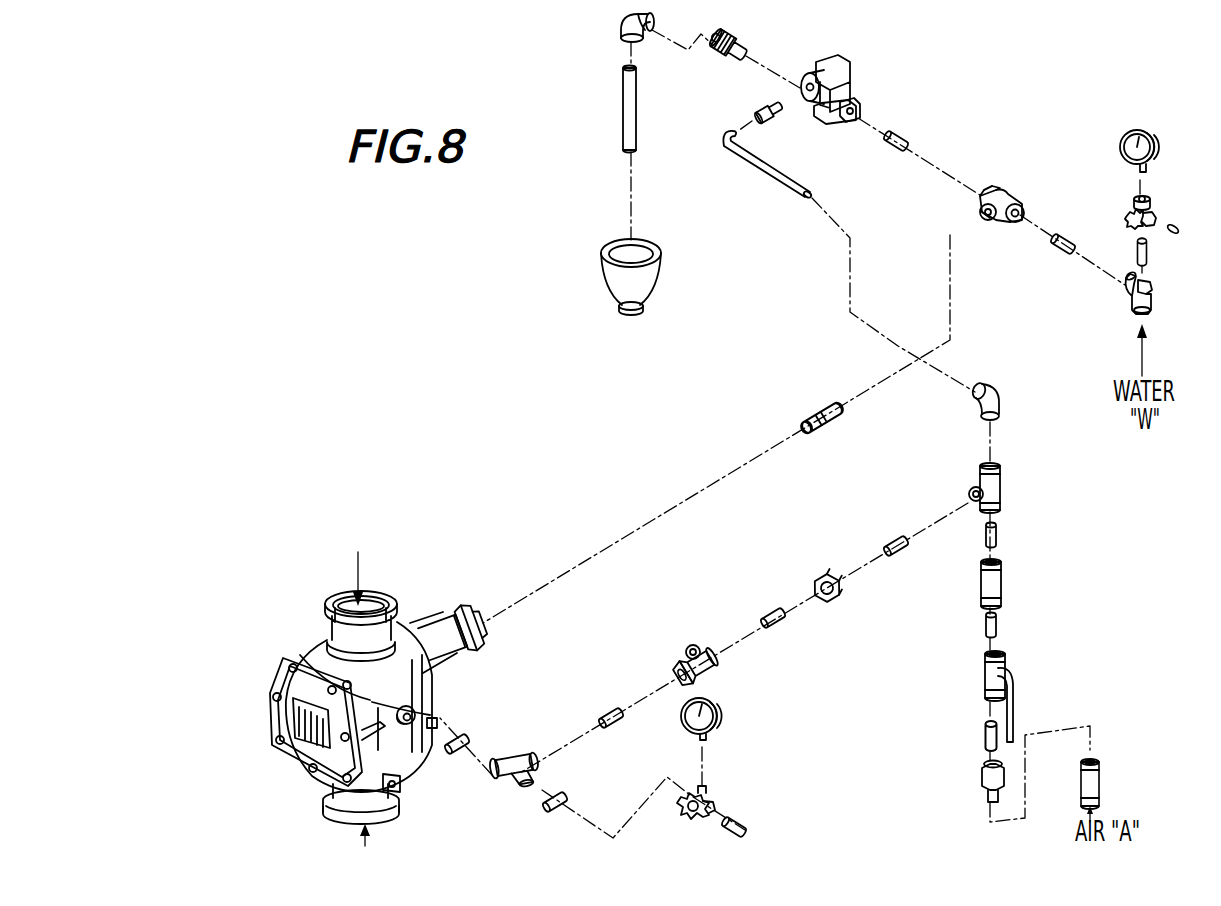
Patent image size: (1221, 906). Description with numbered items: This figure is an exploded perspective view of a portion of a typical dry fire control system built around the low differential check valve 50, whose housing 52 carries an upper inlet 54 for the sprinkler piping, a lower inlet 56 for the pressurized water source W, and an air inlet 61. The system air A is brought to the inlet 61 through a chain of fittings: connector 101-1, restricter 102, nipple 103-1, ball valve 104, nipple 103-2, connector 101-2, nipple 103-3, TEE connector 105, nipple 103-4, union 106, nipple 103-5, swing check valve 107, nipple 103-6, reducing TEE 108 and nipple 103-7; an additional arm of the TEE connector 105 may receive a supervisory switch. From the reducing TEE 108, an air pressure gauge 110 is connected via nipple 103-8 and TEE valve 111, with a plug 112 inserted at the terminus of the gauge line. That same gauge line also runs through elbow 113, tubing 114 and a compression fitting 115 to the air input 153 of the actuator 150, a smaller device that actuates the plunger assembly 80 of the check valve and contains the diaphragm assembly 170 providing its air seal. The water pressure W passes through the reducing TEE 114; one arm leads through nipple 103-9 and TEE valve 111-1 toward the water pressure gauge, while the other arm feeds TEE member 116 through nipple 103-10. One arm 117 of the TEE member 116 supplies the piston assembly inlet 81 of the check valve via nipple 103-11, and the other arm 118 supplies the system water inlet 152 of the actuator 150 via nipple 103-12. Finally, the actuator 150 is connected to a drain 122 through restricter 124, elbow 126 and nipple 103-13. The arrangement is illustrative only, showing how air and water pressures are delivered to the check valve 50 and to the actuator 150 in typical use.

The check valve 50 is at (410, 615).
The housing 52 is at (316, 640).
The upper inlet 54 is at (382, 603).
The inlet 56 is at (398, 814).
The inlet 61 is at (414, 713).
The plunger assembly 80 is at (458, 668).
The piston assembly inlet 81 is at (468, 616).
The connector 101-1 is at (1100, 778).
The connector 101-2 is at (1003, 583).
The restricter 102 is at (980, 778).
The nipple 103-1 is at (988, 733).
The nipple 103-2 is at (1002, 623).
The nipple 103-3 is at (1000, 532).
The nipple 103-4 is at (893, 540).
The nipple 103-5 is at (778, 623).
The nipple 103-6 is at (607, 711).
The nipple 103-7 is at (460, 741).
The nipple 103-8 is at (566, 790).
The nipple 103-9 is at (1148, 256).
The nipple 103-10 is at (1058, 240).
The nipple 103-11 is at (834, 412).
The nipple 103-12 is at (900, 137).
The nipple 103-13 is at (624, 108).
The ball valve 104 is at (1010, 680).
The TEE connector 105 is at (1000, 489).
The union 106 is at (823, 580).
The swing check valve 107 is at (690, 660).
The reducing TEE 108 is at (513, 786).
The air pressure gauge 110 is at (729, 720).
The TEE valve 111 is at (702, 798).
The TEE valve 111-1 is at (1152, 210).
The plug 112 is at (742, 818).
The elbow 113 is at (977, 399).
The tubing / reducing TEE 114 is at (752, 170).
The compression fitting 115 is at (768, 102).
The TEE member 116 is at (1007, 203).
The arm 117 is at (987, 216).
The arm 118 is at (988, 190).
The drain 122 is at (620, 243).
The restricter 124 is at (736, 40).
The elbow 126 is at (618, 24).
The actuator 150 is at (842, 64).
The system water inlet 152 is at (849, 104).
The input / air pressure inlet 153 is at (805, 76).
The diaphragm assembly 170 is at (1158, 133).